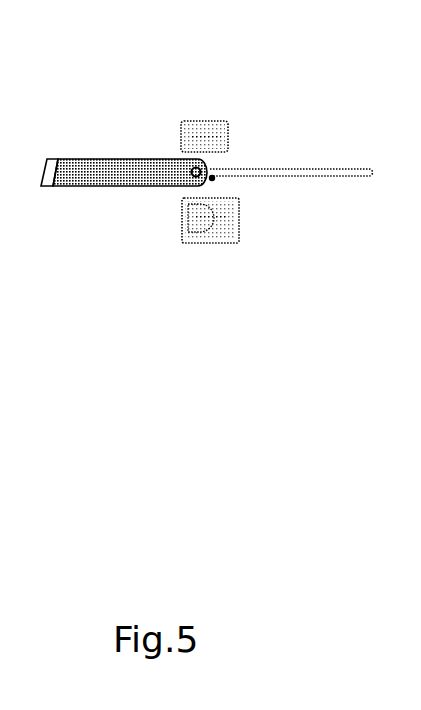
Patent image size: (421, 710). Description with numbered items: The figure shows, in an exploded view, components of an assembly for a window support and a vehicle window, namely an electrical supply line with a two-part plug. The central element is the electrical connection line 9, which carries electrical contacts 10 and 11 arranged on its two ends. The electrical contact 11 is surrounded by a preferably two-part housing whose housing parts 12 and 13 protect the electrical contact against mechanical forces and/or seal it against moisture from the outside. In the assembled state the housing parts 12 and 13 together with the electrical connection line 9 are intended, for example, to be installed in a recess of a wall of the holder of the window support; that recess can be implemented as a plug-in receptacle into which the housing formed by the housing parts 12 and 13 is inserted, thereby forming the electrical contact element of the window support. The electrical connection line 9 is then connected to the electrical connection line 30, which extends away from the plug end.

The electrical connection line 9 is at (121, 157).
The electrical contact 10 is at (58, 157).
The electrical contact 11 is at (214, 180).
The housing part 12 is at (205, 118).
The housing part 13 is at (178, 218).
The electrical connection line 30 is at (288, 165).